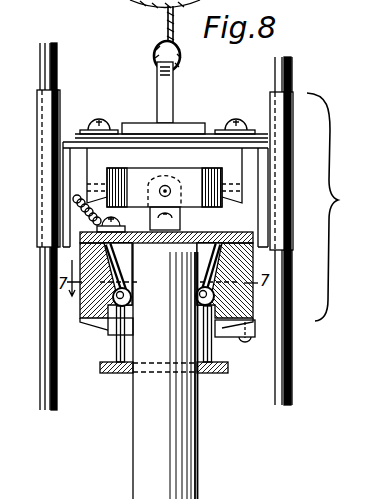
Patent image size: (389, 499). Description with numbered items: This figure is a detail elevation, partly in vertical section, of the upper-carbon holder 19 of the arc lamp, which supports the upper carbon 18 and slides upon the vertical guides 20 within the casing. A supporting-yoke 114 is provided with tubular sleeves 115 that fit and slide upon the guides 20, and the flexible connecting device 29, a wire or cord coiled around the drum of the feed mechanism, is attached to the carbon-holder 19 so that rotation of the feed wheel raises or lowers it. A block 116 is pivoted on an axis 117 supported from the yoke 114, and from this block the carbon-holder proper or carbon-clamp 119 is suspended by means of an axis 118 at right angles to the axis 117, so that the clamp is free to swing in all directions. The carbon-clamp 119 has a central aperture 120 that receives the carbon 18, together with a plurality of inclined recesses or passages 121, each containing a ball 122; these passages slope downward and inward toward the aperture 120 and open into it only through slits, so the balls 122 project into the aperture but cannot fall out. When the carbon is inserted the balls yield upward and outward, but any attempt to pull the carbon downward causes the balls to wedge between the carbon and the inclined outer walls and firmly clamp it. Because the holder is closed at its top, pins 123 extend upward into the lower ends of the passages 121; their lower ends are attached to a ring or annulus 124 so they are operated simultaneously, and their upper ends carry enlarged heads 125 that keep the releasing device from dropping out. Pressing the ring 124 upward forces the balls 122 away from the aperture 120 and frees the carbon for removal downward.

The upper carbon 18 is at (165, 371).
The holder 19 is at (336, 207).
The vertical guides 20 is at (178, 226).
The flexible connecting device 29 is at (166, 31).
The supporting-yoke 114 is at (207, 127).
The tubular sleeves 115 is at (44, 113).
The block 116 is at (164, 199).
The axis 117 is at (242, 188).
The axis 118 is at (168, 187).
The carbon-clamp 119 is at (246, 317).
The central aperture 120 is at (212, 243).
The inclined recesses or passages 121 is at (223, 266).
The ball 122 is at (197, 300).
The pins 123 is at (116, 343).
The ring or annulus 124 is at (215, 367).
The enlarged heads 125 is at (245, 322).